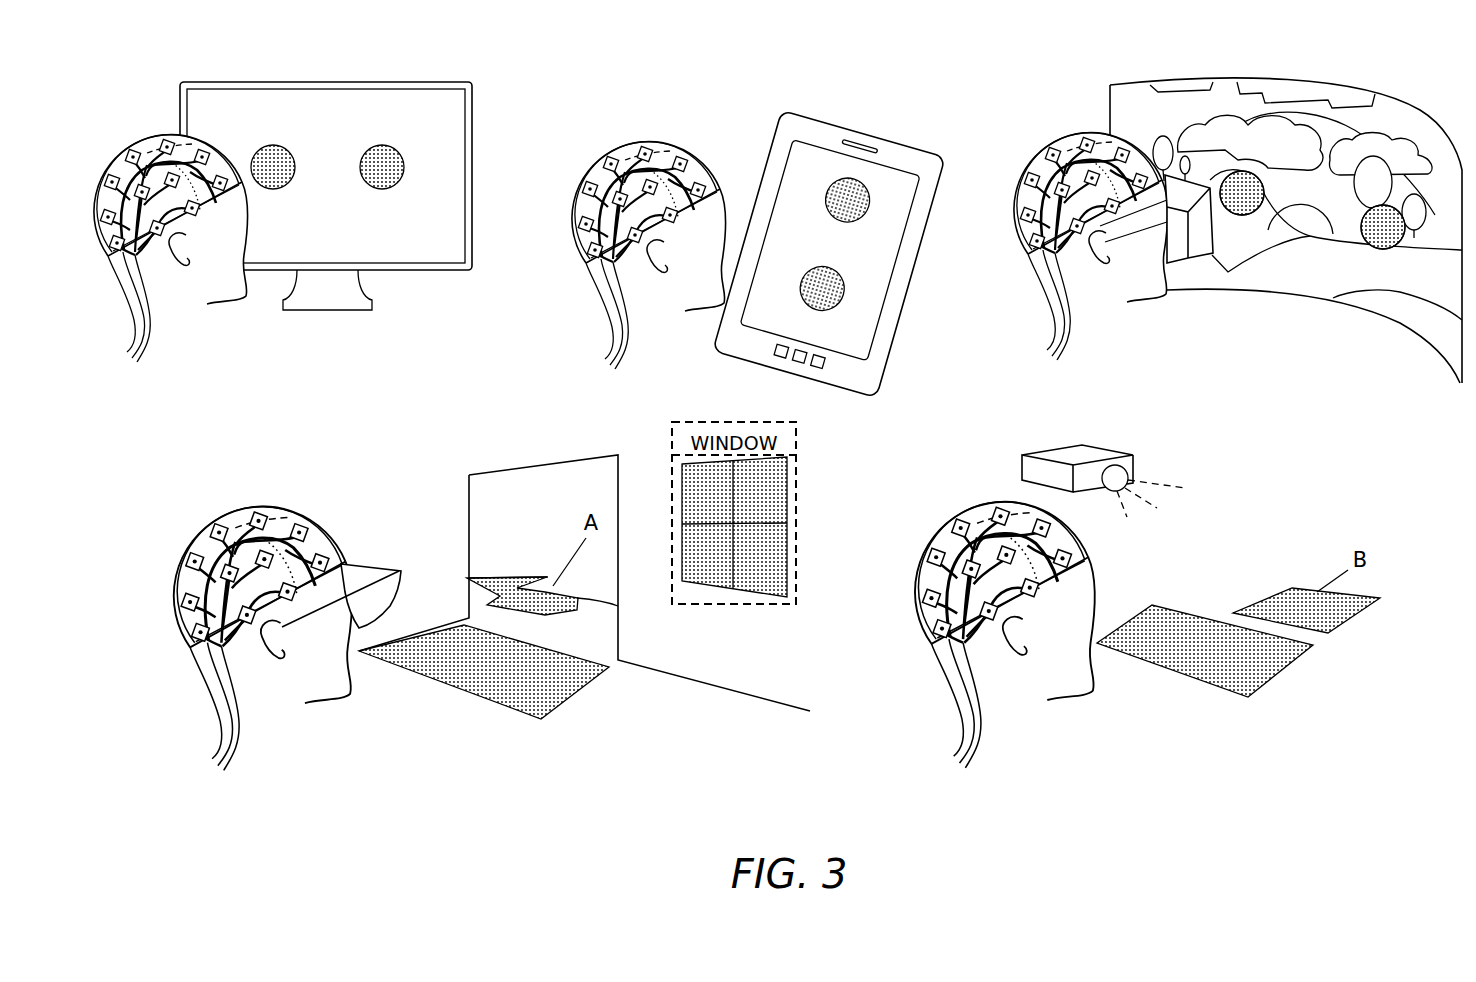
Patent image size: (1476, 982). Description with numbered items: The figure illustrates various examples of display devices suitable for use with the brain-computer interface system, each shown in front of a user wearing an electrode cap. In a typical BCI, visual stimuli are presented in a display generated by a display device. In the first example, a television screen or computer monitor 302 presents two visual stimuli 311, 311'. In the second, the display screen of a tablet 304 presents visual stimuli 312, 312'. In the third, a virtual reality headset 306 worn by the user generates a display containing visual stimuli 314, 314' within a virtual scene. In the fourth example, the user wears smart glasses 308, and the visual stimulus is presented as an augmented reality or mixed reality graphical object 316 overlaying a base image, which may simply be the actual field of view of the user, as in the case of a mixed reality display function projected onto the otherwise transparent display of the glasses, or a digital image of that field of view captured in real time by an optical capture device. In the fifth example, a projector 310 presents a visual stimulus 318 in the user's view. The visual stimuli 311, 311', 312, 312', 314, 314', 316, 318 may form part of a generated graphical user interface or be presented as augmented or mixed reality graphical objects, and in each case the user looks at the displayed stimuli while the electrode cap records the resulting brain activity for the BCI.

The computer monitor 302 is at (441, 82).
The tablet 304 is at (782, 110).
The virtual reality headset 306 is at (1190, 160).
The smart glasses 308 is at (407, 567).
The projector 310 is at (1133, 463).
The visual stimulus 311 is at (284, 167).
The visual stimulus 311' is at (395, 167).
The visual stimulus 312 is at (879, 288).
The visual stimulus 312' is at (905, 200).
The visual stimulus 314 is at (1248, 266).
The visual stimulus 314' is at (1371, 296).
The augmented reality graphical object 316 is at (455, 719).
The visual stimulus 318 is at (1160, 697).